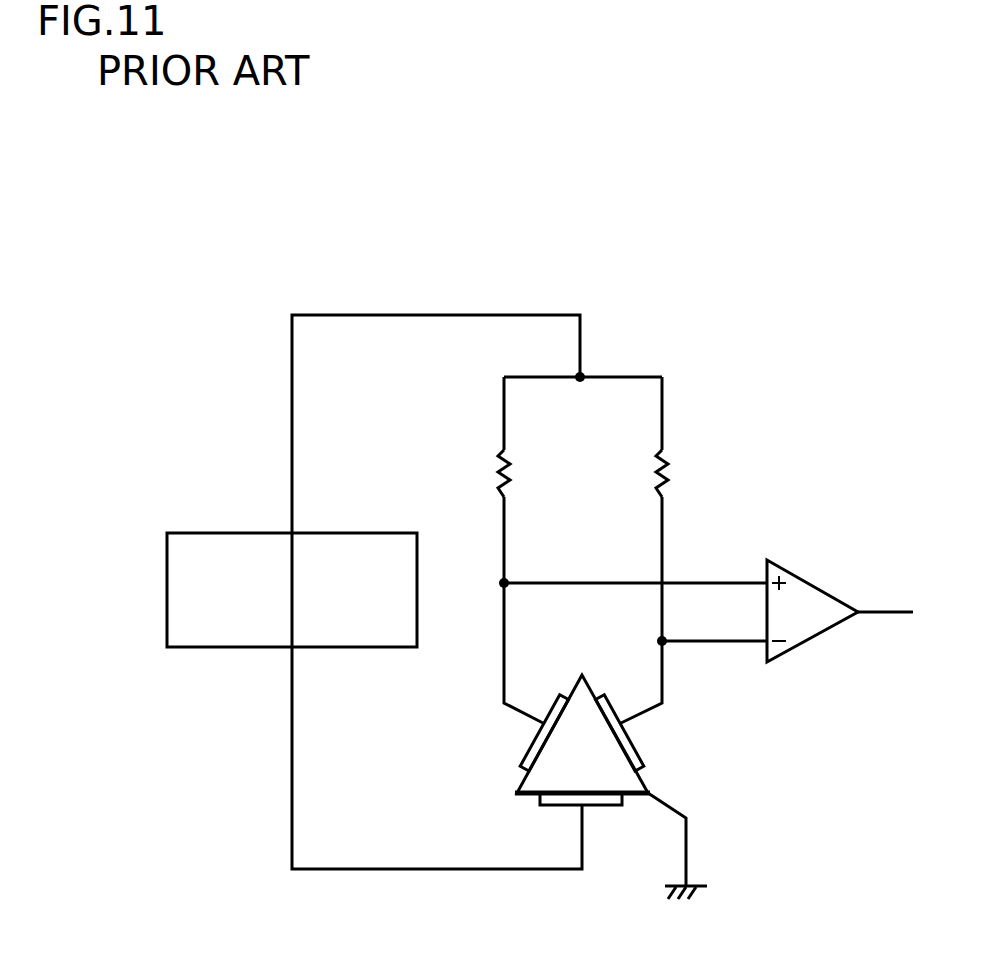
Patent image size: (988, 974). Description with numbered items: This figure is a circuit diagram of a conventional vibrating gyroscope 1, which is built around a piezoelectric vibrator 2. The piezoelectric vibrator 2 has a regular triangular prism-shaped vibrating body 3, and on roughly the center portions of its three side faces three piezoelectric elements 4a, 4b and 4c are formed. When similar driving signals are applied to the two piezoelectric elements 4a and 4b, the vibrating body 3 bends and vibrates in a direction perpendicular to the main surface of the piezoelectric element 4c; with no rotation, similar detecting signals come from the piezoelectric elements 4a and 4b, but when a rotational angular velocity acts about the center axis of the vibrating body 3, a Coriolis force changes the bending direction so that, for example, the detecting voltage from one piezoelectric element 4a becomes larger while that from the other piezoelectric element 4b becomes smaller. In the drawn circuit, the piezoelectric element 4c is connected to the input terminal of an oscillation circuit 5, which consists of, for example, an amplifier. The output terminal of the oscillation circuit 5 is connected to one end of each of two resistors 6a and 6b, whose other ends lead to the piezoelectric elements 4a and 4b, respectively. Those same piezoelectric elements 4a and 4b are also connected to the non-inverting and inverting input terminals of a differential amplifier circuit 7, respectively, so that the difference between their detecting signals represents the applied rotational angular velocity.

The vibrating gyroscope 1 is at (651, 256).
The piezoelectric vibrator 2 is at (588, 780).
The vibrating body 3 is at (522, 790).
The piezoelectric element 4a is at (530, 753).
The piezoelectric element 4b is at (630, 747).
The piezoelectric element 4c is at (608, 800).
The oscillation circuit 5 is at (193, 649).
The resistor 6a is at (498, 466).
The resistor 6b is at (667, 461).
The differential amplifier circuit 7 is at (817, 618).